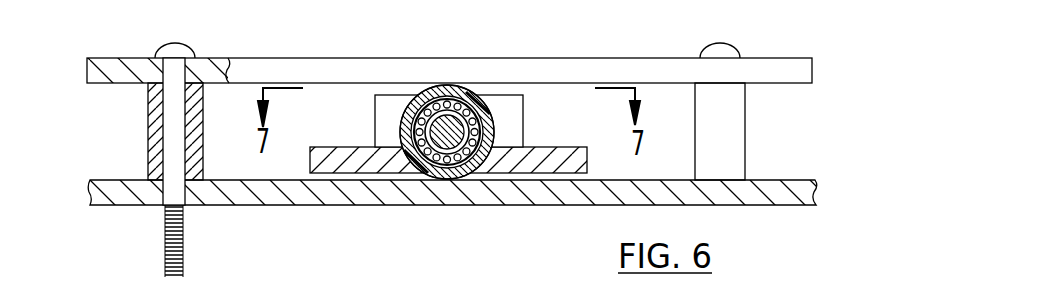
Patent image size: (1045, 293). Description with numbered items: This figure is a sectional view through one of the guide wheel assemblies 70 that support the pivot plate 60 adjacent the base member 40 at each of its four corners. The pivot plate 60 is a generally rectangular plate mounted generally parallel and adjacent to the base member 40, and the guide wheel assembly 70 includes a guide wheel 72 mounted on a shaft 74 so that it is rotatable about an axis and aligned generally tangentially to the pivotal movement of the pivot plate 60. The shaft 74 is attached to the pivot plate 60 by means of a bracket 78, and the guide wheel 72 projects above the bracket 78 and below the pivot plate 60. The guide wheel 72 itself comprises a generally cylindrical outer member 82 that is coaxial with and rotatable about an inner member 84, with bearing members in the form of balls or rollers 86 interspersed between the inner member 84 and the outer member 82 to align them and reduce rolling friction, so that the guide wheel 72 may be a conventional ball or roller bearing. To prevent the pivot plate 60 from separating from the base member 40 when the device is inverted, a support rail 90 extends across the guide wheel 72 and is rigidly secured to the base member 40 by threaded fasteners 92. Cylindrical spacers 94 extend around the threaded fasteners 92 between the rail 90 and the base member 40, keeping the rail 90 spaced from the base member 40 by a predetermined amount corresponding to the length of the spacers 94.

The base member 40 is at (772, 195).
The pivot plate 60 is at (553, 165).
The guide wheel assembly 70 is at (324, 230).
The guide wheel 72 is at (494, 104).
The shaft 74 is at (451, 106).
The bracket 78 is at (390, 103).
The outer member 82 is at (485, 137).
The inner member 84 is at (452, 178).
The balls or rollers 86 is at (432, 101).
The support rail 90 is at (782, 68).
The threaded fastener 92 is at (177, 75).
The cylindrical spacer 94 is at (158, 113).